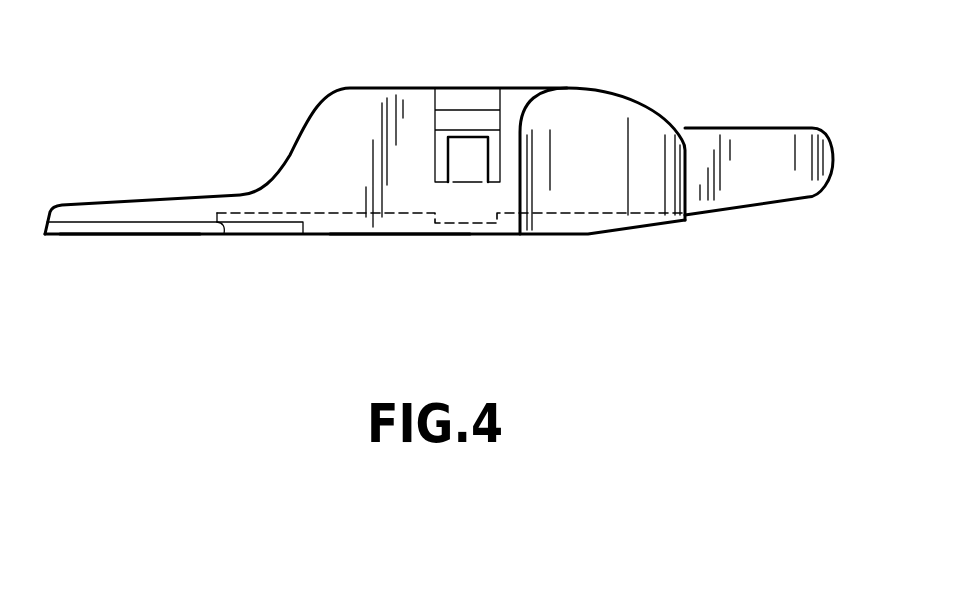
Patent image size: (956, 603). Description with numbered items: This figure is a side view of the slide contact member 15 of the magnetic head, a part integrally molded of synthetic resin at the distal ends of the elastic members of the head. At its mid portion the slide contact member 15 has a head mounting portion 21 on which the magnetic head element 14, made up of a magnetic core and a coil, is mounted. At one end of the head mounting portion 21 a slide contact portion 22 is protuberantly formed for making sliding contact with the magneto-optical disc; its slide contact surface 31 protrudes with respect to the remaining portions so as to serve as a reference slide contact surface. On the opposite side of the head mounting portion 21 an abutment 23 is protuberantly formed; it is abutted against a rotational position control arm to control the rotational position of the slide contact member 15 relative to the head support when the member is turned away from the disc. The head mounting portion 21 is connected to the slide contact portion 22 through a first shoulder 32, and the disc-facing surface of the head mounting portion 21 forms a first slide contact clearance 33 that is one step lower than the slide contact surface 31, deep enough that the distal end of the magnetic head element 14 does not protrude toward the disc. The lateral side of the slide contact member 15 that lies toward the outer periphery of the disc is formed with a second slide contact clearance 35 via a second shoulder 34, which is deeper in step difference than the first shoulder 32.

The magnetic head element 14 is at (477, 223).
The slide contact member 15 is at (347, 88).
The head mounting portion 21 is at (417, 95).
The slide contact portion 22 is at (117, 200).
The abutment 23 is at (745, 143).
The slide contact surface 31 is at (105, 236).
The first shoulder 32 is at (307, 236).
The first slide contact clearance 33 is at (398, 236).
The second shoulder 34 is at (221, 236).
The second slide contact clearance 35 is at (563, 213).